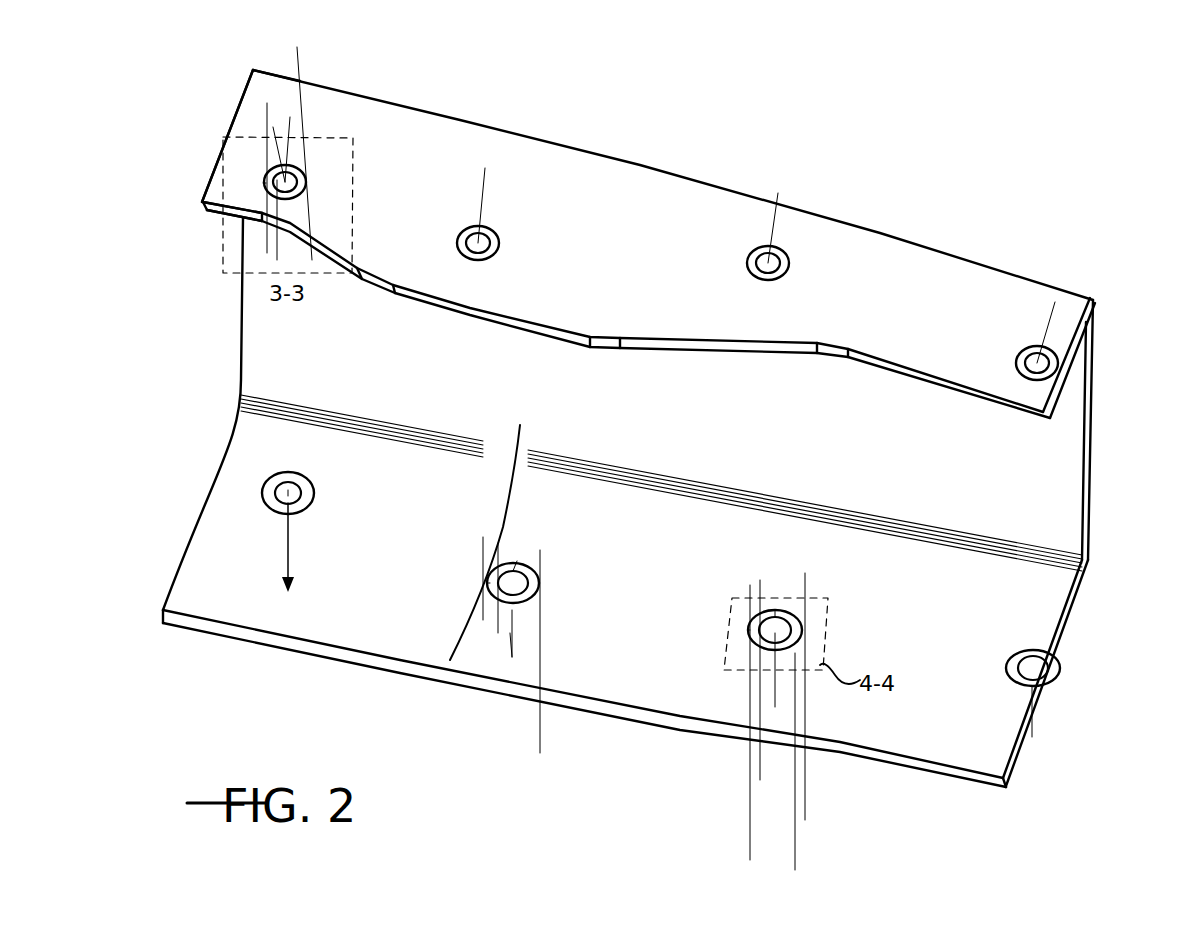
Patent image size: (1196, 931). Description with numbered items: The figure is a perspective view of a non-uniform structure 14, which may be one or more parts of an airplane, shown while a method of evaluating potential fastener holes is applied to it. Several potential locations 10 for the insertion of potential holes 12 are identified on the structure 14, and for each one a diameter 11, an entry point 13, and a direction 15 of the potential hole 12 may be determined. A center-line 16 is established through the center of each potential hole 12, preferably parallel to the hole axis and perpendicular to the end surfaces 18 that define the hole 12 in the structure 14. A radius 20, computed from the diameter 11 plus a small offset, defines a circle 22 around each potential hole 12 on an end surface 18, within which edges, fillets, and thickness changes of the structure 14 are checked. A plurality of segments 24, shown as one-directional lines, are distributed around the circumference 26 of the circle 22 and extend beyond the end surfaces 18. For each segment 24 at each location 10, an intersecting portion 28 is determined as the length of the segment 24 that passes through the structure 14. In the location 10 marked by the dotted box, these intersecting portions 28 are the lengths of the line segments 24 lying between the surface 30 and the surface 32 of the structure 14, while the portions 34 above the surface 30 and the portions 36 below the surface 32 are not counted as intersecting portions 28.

The potential location 10 is at (287, 182).
The diameter 11 is at (288, 485).
The potential hole 12 is at (307, 182).
The entry point 13 is at (287, 498).
The non-uniform structure 14 is at (1063, 237).
The direction 15 is at (283, 563).
The center-line 16 is at (790, 198).
The end surface 18 is at (656, 348).
The radius 20 is at (1030, 374).
The circle 22 is at (1073, 295).
The segment 24 is at (265, 75).
The circumference 26 is at (517, 560).
The intersecting portion 28 is at (263, 183).
The surface 30 is at (218, 183).
The surface 32 is at (210, 210).
The portion above the surface 34 is at (258, 120).
The portion below the surface 36 is at (262, 228).